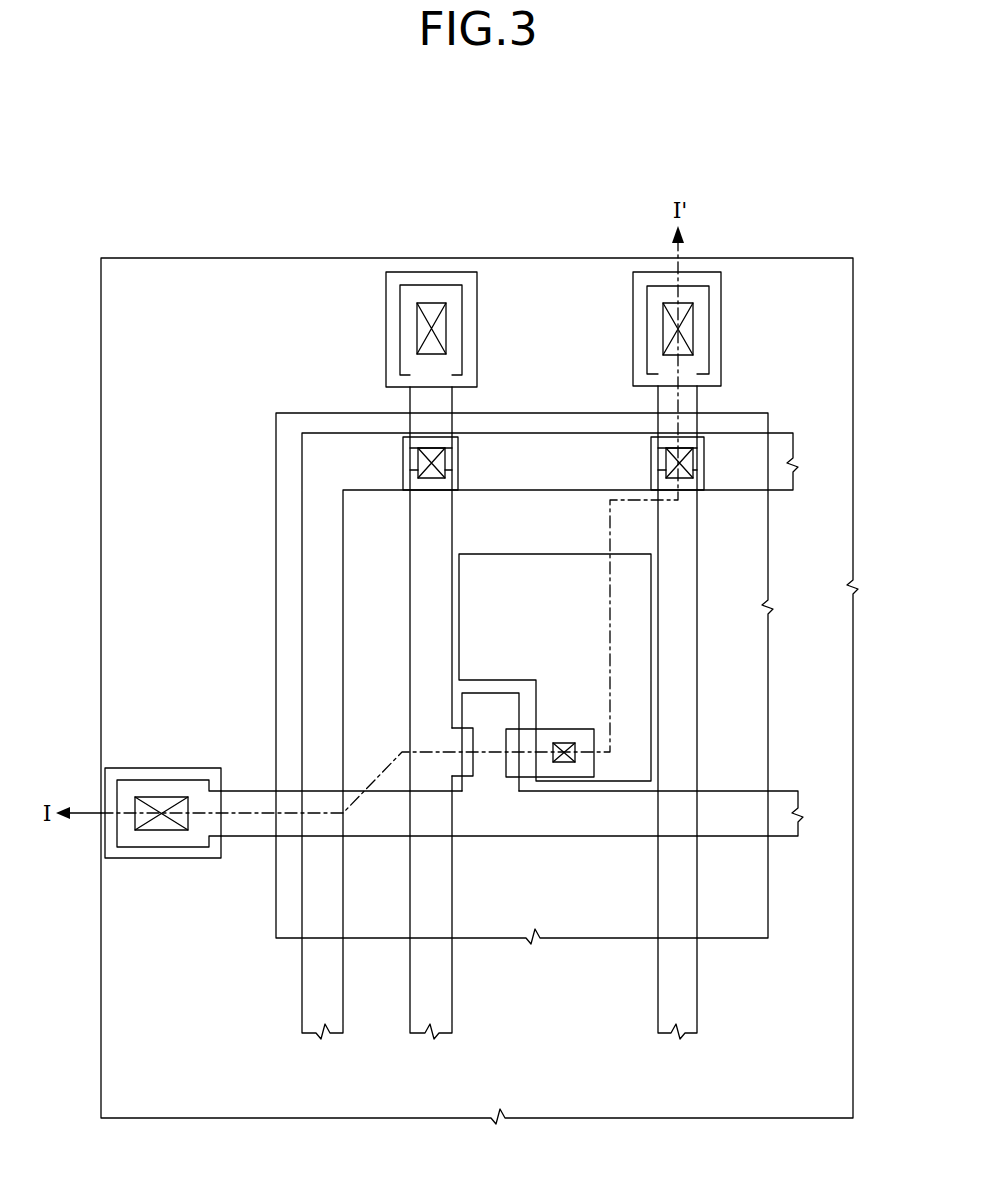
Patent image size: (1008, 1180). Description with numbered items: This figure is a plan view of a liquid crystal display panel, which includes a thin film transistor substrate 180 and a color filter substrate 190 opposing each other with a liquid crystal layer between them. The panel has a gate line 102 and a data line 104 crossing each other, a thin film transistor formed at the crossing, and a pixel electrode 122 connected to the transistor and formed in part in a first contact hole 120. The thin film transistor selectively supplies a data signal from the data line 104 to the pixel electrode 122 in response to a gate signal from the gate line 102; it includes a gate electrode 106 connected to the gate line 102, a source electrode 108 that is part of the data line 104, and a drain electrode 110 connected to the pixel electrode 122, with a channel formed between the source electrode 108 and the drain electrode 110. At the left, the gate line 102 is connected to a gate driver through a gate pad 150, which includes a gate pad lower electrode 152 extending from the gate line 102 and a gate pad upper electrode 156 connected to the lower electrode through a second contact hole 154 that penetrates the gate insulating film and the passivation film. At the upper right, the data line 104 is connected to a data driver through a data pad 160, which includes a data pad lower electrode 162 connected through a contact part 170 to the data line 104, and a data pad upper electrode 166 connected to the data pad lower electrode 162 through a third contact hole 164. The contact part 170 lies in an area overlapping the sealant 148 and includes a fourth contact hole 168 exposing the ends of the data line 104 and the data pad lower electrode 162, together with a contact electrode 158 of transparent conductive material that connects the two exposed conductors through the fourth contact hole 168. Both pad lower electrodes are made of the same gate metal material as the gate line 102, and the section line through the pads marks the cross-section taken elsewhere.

The gate line 102 is at (797, 800).
The data line 104 is at (661, 1005).
The gate electrode 106 is at (495, 700).
The source electrode 108 is at (471, 772).
The drain electrode 110 is at (551, 776).
The first contact hole 120 is at (572, 764).
The pixel electrode 122 is at (652, 668).
The sealant 148 is at (795, 447).
The gate pad 150 is at (171, 793).
The gate pad lower electrode 152 is at (152, 843).
The second contact hole 154 is at (165, 810).
The gate pad upper electrode 156 is at (215, 855).
The contact electrode 158 is at (706, 482).
The data pad 160 is at (676, 305).
The data pad lower electrode 162 is at (706, 355).
The third contact hole 164 is at (676, 328).
The data pad upper electrode 166 is at (722, 320).
The fourth contact hole 168 is at (678, 492).
The contact part 170 is at (704, 513).
The thin film transistor substrate 180 is at (853, 618).
The color filter substrate 190 is at (764, 903).